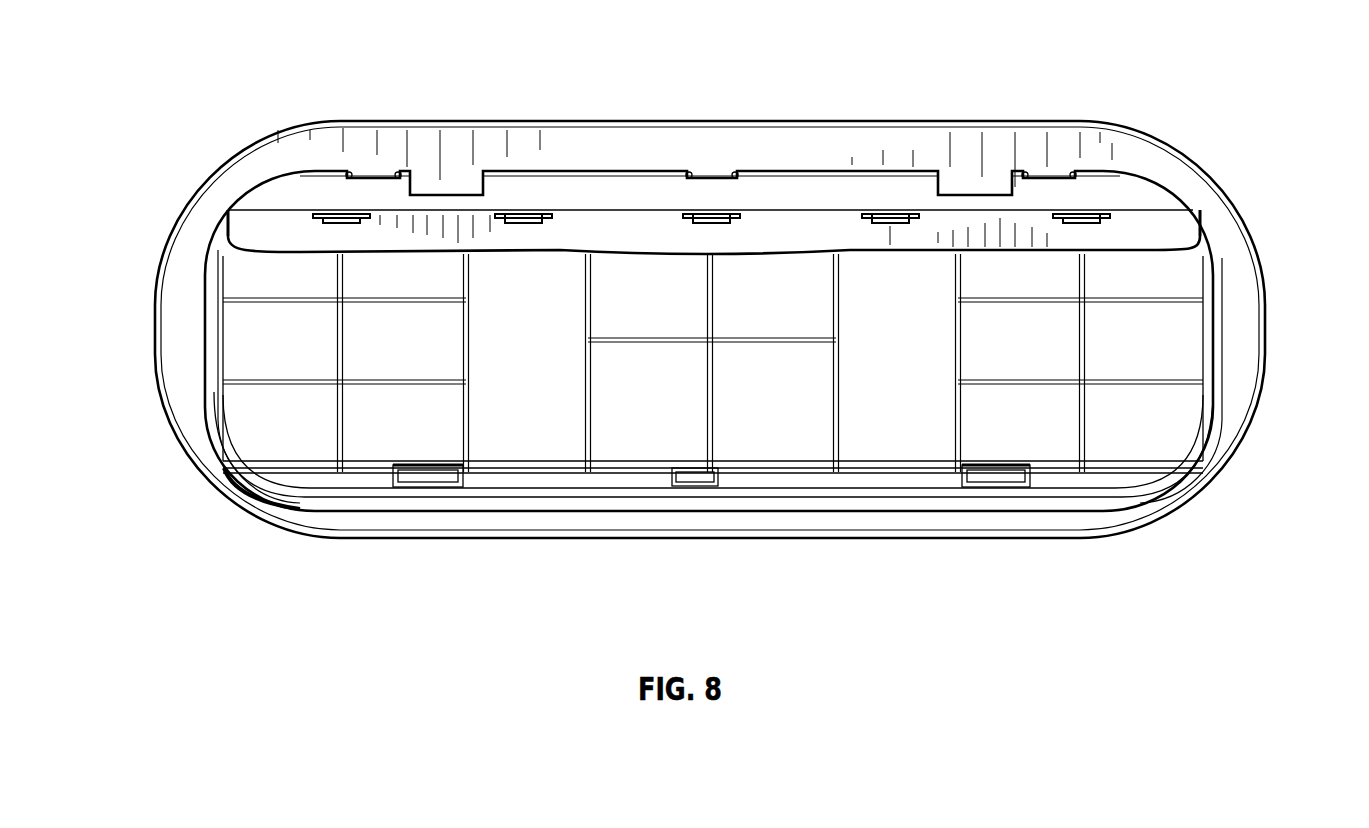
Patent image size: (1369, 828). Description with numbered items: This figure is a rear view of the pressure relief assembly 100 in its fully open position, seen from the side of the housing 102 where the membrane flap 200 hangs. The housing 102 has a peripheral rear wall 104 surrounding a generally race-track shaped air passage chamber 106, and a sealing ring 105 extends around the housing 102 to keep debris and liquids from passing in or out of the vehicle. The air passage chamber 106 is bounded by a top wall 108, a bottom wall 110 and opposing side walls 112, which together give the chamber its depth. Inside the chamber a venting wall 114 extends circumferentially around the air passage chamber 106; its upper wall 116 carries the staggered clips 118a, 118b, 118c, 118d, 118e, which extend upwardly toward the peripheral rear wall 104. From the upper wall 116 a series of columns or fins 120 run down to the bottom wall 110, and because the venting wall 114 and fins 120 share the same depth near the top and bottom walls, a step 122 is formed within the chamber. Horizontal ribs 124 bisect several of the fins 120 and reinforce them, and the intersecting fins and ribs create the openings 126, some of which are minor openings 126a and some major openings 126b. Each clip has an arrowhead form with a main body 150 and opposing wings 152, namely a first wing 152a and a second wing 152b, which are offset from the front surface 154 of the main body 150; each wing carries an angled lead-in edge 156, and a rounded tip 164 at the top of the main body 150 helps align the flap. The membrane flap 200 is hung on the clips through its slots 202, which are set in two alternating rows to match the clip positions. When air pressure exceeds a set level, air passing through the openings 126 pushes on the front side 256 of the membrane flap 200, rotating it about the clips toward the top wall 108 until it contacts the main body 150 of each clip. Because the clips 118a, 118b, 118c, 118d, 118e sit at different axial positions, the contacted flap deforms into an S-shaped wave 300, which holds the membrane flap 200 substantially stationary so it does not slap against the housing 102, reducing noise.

The pressure relief assembly 100 is at (148, 120).
The housing 102 is at (1193, 183).
The peripheral rear wall 104 is at (252, 163).
The sealing ring 105 is at (200, 496).
The air passage chamber 106 is at (1190, 322).
The top wall 108 is at (825, 165).
The bottom wall 110 is at (887, 498).
The opposing side walls 112 is at (215, 322).
The venting wall 114 is at (1212, 275).
The upper wall 116 is at (610, 190).
The clip 118a is at (350, 213).
The clip 118b is at (528, 213).
The clip 118c is at (710, 213).
The clip 118d is at (895, 213).
The clip 118e is at (1075, 213).
The fins 120 is at (345, 330).
The step 122 is at (1213, 400).
The horizontal ribs 124 is at (392, 298).
The openings 126 is at (386, 447).
The minor openings 126a is at (1032, 447).
The major openings 126b is at (526, 447).
The main body 150 is at (350, 226).
The opposing wings 152 is at (512, 228).
The first wing 152a is at (688, 212).
The second wing 152b is at (740, 224).
The front surface 154 is at (878, 222).
The angled lead-in edge 156 is at (1102, 212).
The rounded tip 164 is at (912, 212).
The membrane flap 200 is at (1147, 223).
The slots 202 is at (326, 232).
The front side 256 is at (230, 250).
The wave 300 is at (891, 233).